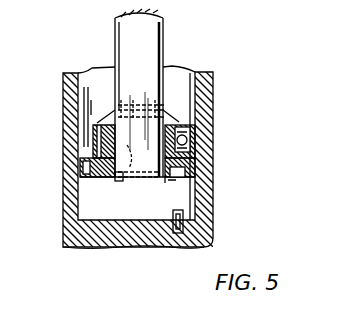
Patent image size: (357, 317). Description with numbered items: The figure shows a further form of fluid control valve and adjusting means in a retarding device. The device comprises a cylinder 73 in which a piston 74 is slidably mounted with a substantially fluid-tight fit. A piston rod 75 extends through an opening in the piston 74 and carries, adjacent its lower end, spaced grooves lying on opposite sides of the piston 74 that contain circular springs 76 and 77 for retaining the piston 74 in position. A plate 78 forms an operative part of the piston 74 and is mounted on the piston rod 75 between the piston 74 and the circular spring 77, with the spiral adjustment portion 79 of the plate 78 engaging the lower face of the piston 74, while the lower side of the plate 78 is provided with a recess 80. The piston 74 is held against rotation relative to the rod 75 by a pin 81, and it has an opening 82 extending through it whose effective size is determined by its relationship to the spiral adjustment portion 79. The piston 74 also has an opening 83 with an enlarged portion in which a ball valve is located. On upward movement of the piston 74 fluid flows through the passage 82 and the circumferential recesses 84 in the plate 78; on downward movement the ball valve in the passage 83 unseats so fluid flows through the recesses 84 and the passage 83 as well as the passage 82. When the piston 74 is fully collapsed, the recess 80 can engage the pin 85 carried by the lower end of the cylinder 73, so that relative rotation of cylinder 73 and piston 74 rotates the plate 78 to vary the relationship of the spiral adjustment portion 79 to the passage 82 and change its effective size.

The cylinder 73 is at (214, 238).
The piston 74 is at (188, 150).
The piston rod 75 is at (163, 62).
The circular spring 76 is at (166, 110).
The circular spring 77 is at (116, 182).
The plate 78 is at (193, 176).
The spiral adjustment portion 79 is at (83, 165).
The recess 80 is at (176, 180).
The pin 81 is at (126, 180).
The opening 82 is at (92, 128).
The opening 83 is at (193, 127).
The circumferential recesses 84 is at (83, 171).
The pin 85 is at (183, 215).